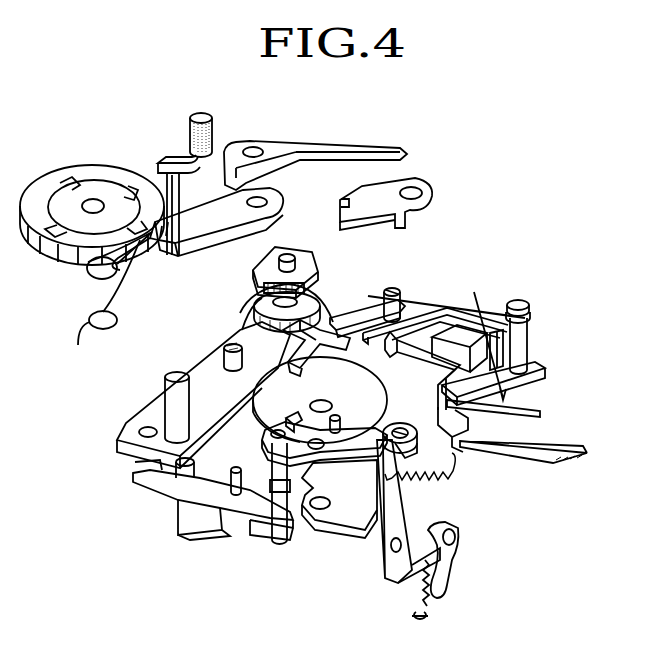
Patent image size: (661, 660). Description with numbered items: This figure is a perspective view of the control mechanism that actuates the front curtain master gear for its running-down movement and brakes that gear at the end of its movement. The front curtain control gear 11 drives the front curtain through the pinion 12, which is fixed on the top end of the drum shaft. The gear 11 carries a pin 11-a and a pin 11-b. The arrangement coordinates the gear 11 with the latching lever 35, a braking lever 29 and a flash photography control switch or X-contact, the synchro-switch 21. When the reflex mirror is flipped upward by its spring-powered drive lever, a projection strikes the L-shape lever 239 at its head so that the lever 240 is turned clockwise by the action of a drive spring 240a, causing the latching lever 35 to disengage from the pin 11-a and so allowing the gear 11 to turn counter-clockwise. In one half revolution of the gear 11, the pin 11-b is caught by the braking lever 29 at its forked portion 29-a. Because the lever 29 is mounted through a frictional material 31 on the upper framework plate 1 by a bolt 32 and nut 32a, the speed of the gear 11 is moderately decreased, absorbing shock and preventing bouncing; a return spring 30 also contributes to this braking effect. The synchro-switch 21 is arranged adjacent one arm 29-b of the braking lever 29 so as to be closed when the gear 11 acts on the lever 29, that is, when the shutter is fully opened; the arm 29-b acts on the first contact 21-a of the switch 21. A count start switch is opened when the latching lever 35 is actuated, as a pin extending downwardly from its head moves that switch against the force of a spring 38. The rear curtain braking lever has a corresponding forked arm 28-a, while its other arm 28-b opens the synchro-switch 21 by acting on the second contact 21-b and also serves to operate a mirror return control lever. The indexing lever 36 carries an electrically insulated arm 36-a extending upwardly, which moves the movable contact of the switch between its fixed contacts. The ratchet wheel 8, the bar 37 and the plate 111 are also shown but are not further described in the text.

The upper framework plate 1 is at (555, 448).
The ratchet wheel 8 is at (92, 173).
The front curtain control gear 11 is at (268, 422).
The pin 11-a is at (290, 420).
The pin 11-b is at (343, 428).
The pinion 12 is at (396, 430).
The synchro-switch 21 is at (525, 337).
The first contact 21-a is at (452, 315).
The second contact 21-b is at (450, 403).
The forked arm 28-a is at (385, 178).
The arm 28-b is at (468, 440).
The braking lever 29 is at (344, 305).
The forked portion 29-a is at (228, 333).
The arm 29-b is at (386, 288).
The return spring 30 is at (435, 300).
The frictional material 31 is at (326, 292).
The bolt 32 is at (287, 258).
The nut 32a is at (262, 280).
The latching lever 35 is at (365, 452).
The indexing lever 36 is at (222, 226).
The electrically insulated arm 36-a is at (190, 130).
The arm 37 is at (345, 150).
The spring 38 is at (248, 495).
The plate 111 is at (345, 512).
The L-shape lever 239 is at (450, 582).
The lever 240 is at (387, 546).
The drive spring 240a is at (450, 463).